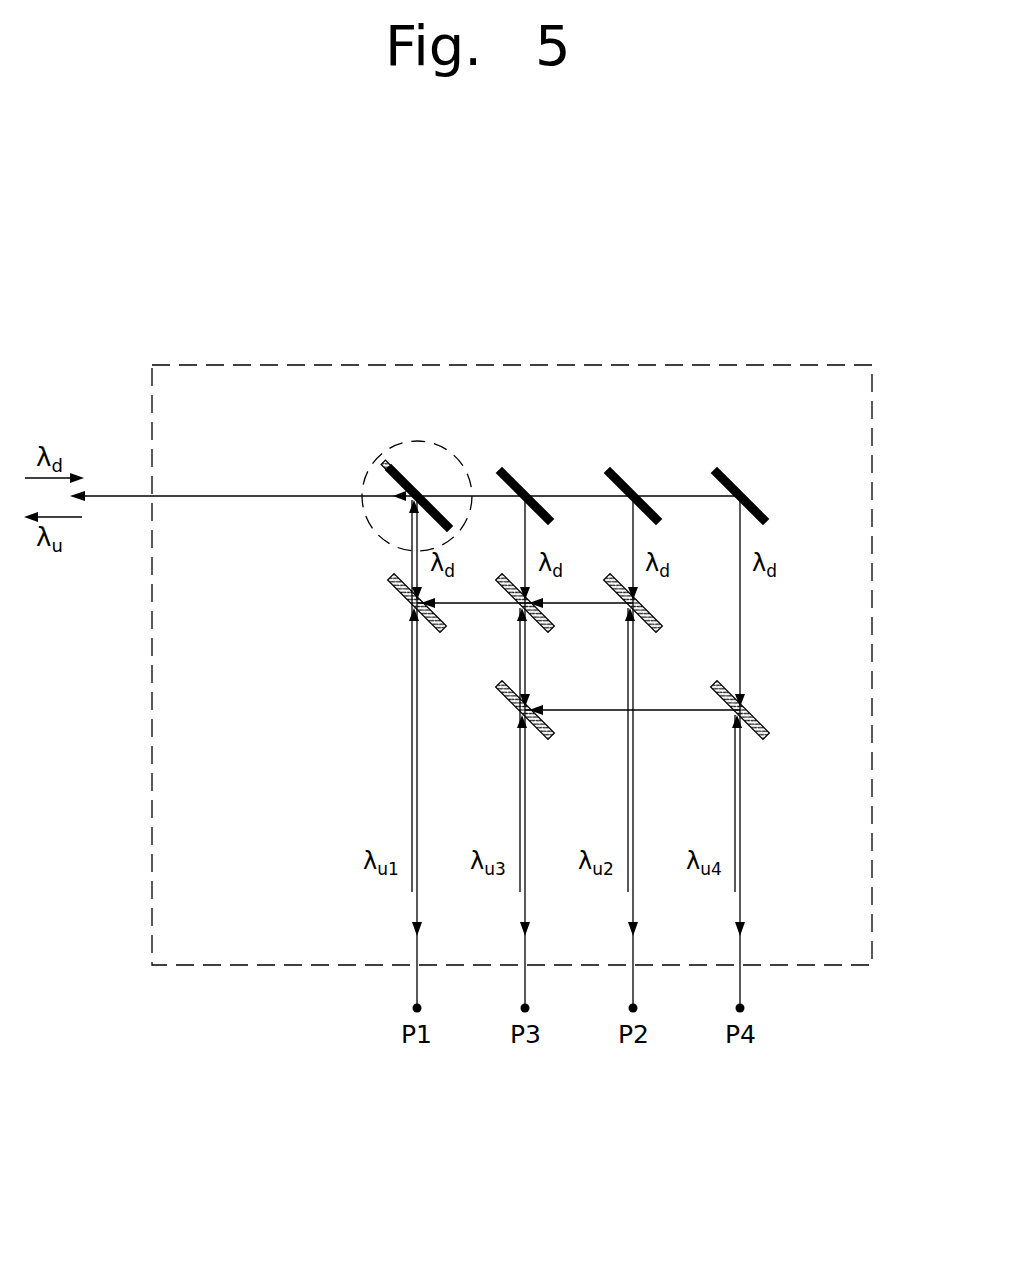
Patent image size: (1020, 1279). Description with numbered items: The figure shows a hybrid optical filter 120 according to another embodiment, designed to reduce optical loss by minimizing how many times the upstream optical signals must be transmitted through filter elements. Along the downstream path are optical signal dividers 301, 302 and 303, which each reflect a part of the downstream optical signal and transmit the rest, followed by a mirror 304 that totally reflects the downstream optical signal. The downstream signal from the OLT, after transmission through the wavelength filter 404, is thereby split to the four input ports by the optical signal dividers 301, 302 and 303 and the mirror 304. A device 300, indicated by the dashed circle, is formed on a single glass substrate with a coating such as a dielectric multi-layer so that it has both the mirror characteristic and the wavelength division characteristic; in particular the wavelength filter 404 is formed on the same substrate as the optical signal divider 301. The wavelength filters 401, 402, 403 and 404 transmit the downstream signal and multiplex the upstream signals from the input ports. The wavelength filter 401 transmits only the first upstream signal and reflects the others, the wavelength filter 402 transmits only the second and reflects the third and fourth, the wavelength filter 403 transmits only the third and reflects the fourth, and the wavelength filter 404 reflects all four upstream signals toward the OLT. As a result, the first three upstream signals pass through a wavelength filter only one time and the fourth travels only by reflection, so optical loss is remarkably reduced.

The optical filter 120 is at (803, 290).
The device 300 is at (363, 485).
The optical signal divider 301 is at (410, 462).
The optical signal divider 302 is at (509, 470).
The optical signal divider 303 is at (616, 470).
The mirror 304 is at (724, 470).
The wavelength filter 401 is at (404, 606).
The wavelength filter 402 is at (516, 604).
The wavelength filter 403 is at (516, 700).
The wavelength filter 404 is at (378, 525).